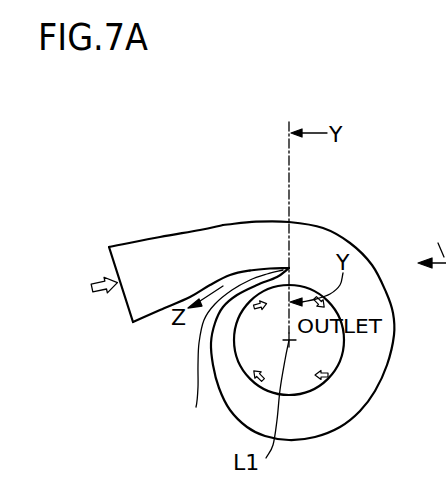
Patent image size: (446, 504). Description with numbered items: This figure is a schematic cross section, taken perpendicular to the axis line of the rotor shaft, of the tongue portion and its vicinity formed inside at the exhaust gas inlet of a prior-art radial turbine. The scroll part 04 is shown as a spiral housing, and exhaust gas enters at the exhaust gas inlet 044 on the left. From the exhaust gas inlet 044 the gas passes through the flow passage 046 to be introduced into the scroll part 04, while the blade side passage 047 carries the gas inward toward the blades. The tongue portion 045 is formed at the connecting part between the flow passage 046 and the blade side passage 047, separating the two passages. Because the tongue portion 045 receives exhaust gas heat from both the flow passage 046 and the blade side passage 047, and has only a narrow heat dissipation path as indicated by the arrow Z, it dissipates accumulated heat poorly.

The scroll part 04 is at (357, 393).
The exhaust gas inlet 044 is at (125, 322).
The tongue portion 045 is at (290, 268).
The flow passage 046 is at (182, 252).
The blade side passage 047 is at (196, 407).